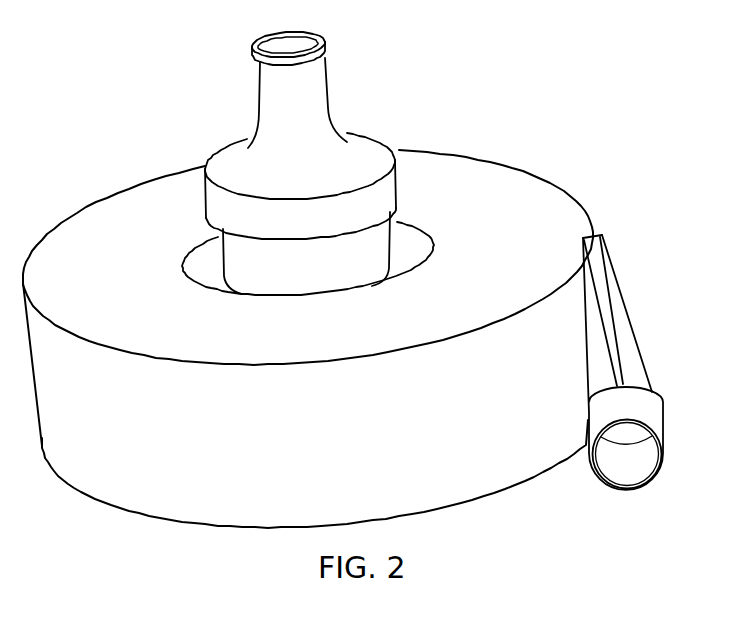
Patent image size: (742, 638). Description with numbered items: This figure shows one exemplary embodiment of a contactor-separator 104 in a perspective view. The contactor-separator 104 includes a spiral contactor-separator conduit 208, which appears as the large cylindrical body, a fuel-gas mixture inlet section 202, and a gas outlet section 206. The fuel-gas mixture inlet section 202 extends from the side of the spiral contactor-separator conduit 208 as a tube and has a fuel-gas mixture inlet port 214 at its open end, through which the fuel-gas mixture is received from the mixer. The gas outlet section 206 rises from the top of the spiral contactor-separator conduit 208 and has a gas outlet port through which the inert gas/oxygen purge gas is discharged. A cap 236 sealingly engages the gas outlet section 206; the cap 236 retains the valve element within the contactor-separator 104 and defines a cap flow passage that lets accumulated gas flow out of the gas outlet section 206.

The contactor-separator 104 is at (514, 70).
The spiral contactor-separator conduit 208 is at (568, 208).
The gas outlet section 206 is at (383, 246).
The cap 236 is at (326, 72).
The fuel-gas mixture inlet section 202 is at (661, 422).
The fuel-gas mixture inlet port 214 is at (628, 470).